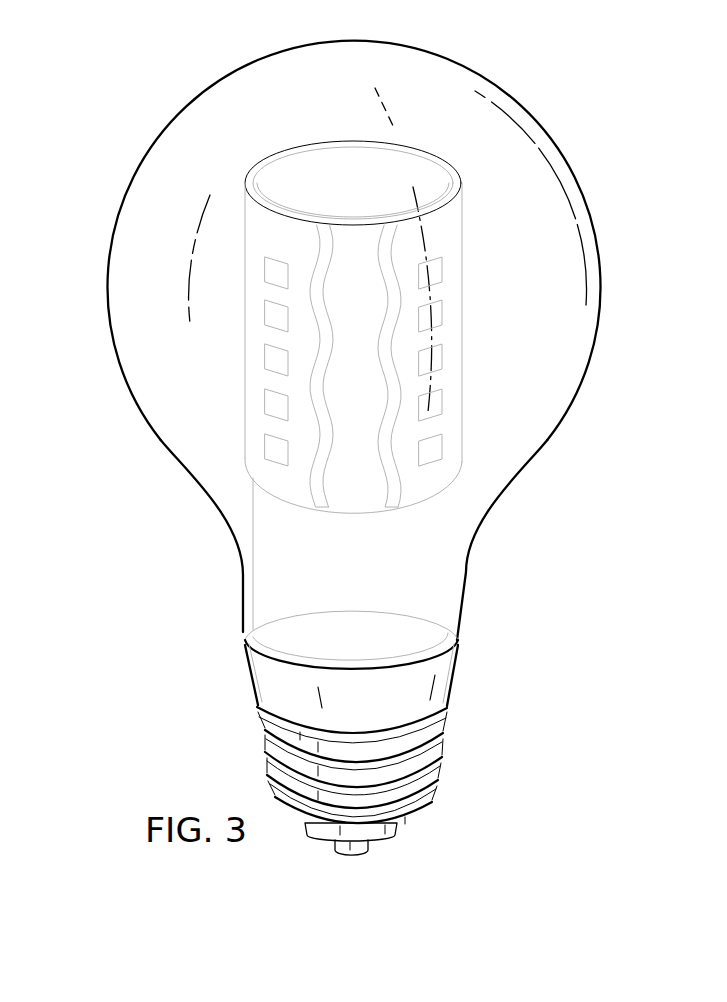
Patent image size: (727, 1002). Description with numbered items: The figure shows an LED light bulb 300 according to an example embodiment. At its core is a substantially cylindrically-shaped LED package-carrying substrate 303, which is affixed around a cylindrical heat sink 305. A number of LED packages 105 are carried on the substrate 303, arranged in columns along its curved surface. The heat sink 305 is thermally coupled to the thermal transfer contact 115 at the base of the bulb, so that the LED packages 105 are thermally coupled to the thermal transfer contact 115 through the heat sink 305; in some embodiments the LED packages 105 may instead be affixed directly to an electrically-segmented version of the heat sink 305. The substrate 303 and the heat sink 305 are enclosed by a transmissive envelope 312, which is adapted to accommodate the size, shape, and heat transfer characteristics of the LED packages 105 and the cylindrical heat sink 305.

The LED light bulb 300 is at (509, 57).
The transmissive envelope 312 is at (125, 203).
The LED package-carrying substrate 303 is at (253, 423).
The LED packages 105 is at (268, 367).
The cylindrical heat sink 305 is at (453, 570).
The thermal transfer contact 115 is at (455, 665).